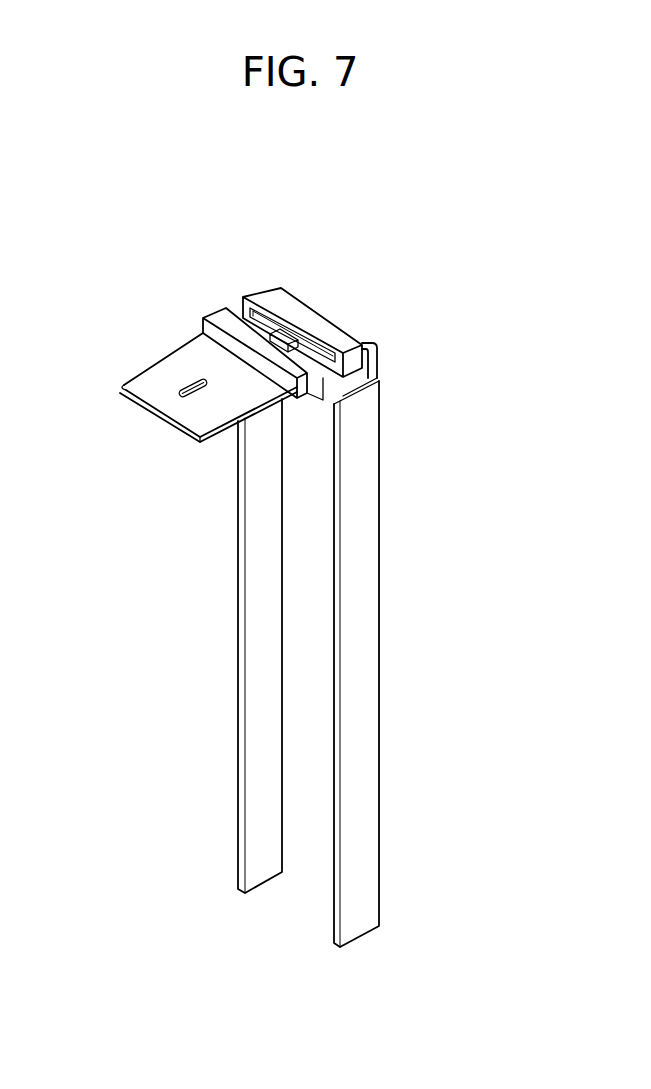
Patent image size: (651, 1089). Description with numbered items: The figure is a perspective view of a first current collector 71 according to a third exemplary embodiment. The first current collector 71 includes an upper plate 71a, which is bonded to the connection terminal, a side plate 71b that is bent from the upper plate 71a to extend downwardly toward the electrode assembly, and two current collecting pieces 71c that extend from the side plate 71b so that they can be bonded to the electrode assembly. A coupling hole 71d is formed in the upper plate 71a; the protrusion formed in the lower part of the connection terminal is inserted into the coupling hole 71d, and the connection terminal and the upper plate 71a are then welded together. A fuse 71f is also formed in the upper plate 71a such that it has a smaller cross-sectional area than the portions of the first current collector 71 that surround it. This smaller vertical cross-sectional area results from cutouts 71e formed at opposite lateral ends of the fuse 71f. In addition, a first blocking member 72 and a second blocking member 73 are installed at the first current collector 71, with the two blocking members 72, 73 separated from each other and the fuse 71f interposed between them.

The first current collector 71 is at (362, 316).
The upper plate 71a is at (167, 375).
The side plate 71b is at (377, 358).
The current collecting pieces 71c is at (358, 675).
The coupling hole 71d is at (178, 390).
The cutouts 71e is at (330, 372).
The fuse 71f is at (288, 338).
The first blocking member 72 is at (218, 318).
The second blocking member 73 is at (265, 293).